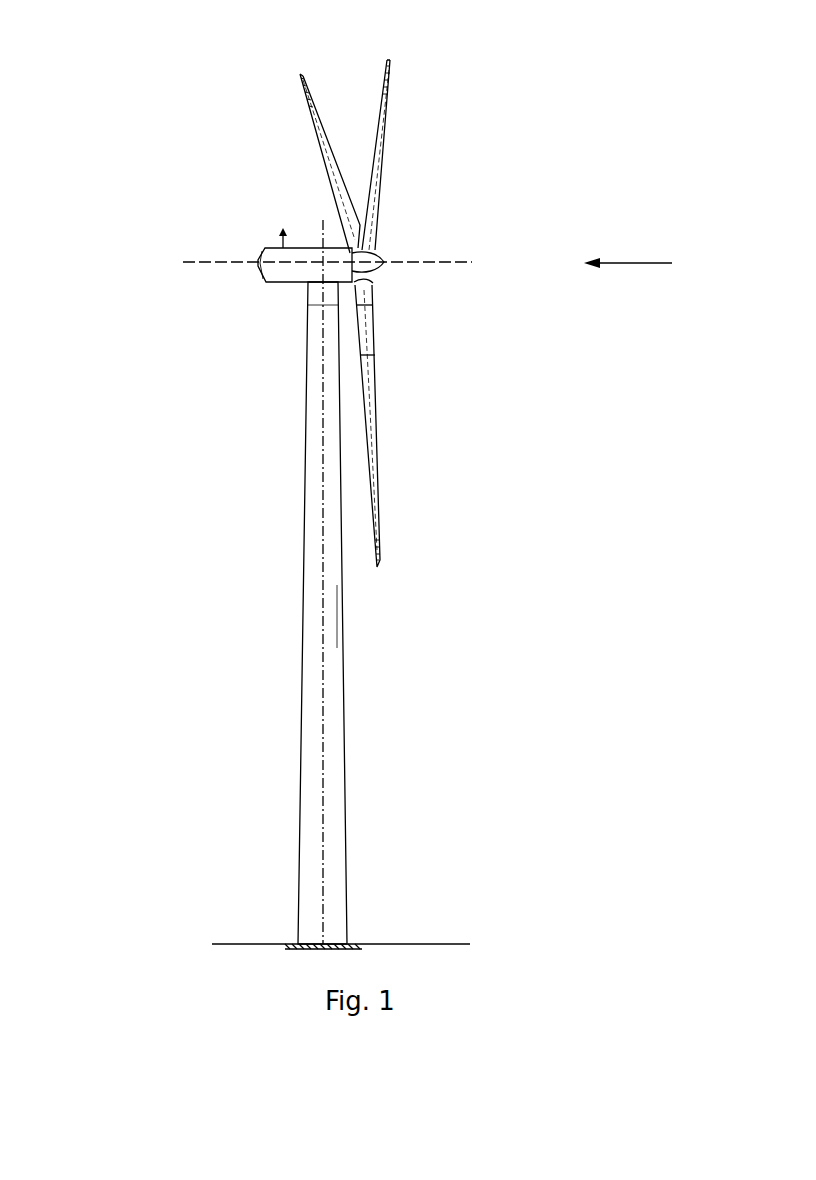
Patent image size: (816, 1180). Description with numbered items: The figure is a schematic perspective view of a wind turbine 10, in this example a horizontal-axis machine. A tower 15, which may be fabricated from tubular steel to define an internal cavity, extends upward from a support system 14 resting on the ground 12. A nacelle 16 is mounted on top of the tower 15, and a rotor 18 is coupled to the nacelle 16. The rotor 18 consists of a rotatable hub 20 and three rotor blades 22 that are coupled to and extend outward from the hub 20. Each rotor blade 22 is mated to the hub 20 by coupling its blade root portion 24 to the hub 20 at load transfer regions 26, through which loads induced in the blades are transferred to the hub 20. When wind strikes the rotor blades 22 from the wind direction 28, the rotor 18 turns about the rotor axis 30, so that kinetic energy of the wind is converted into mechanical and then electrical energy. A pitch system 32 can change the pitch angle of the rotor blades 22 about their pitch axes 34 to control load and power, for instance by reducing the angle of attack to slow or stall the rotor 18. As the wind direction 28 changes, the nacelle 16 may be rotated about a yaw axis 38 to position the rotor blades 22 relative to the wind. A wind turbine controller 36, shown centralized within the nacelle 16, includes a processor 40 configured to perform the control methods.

The wind turbine 10 is at (112, 76).
The ground 12 is at (233, 944).
The support system 14 is at (290, 944).
The tower 15 is at (303, 592).
The nacelle 16 is at (284, 283).
The rotor 18 is at (400, 176).
The rotatable hub 20 is at (385, 259).
The rotor blade 22 is at (316, 131).
The blade root portion 24 is at (373, 355).
The load transfer region 26 is at (360, 282).
The wind direction 28 is at (646, 262).
The rotor axis 30 is at (445, 265).
The pitch system 32 is at (372, 305).
The pitch axis 34 is at (300, 75).
The wind turbine controller 36 is at (310, 313).
The yaw axis 38 is at (324, 652).
The processor 40 is at (333, 247).